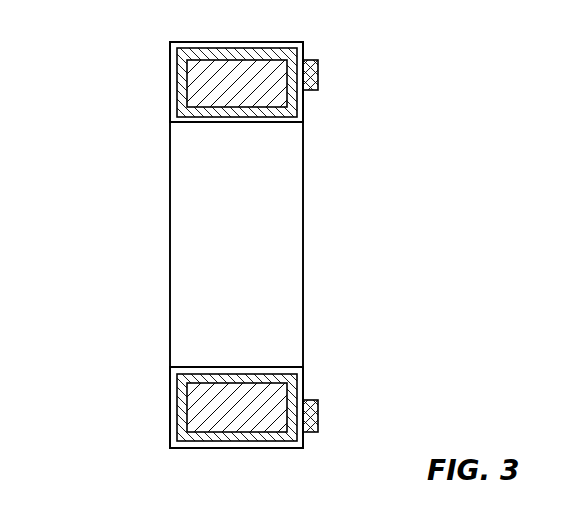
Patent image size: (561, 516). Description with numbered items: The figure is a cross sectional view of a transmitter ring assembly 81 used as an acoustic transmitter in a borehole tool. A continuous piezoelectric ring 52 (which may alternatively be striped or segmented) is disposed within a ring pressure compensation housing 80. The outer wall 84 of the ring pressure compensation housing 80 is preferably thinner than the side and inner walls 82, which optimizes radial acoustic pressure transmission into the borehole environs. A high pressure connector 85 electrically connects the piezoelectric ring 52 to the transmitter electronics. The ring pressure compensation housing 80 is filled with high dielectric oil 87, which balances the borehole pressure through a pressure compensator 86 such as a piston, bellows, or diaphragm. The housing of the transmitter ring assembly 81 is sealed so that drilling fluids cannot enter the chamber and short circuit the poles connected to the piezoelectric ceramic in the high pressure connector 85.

The ring pressure compensation housing 80 is at (304, 295).
The transmitter ring assembly 81 is at (357, 123).
The side and inner walls 82 is at (169, 242).
The outer wall 84 is at (265, 42).
The high pressure connector 85 is at (318, 75).
The pressure compensator 86 is at (318, 415).
The high dielectric oil 87 is at (182, 75).
The continuous piezoelectric ring 52 is at (205, 86).